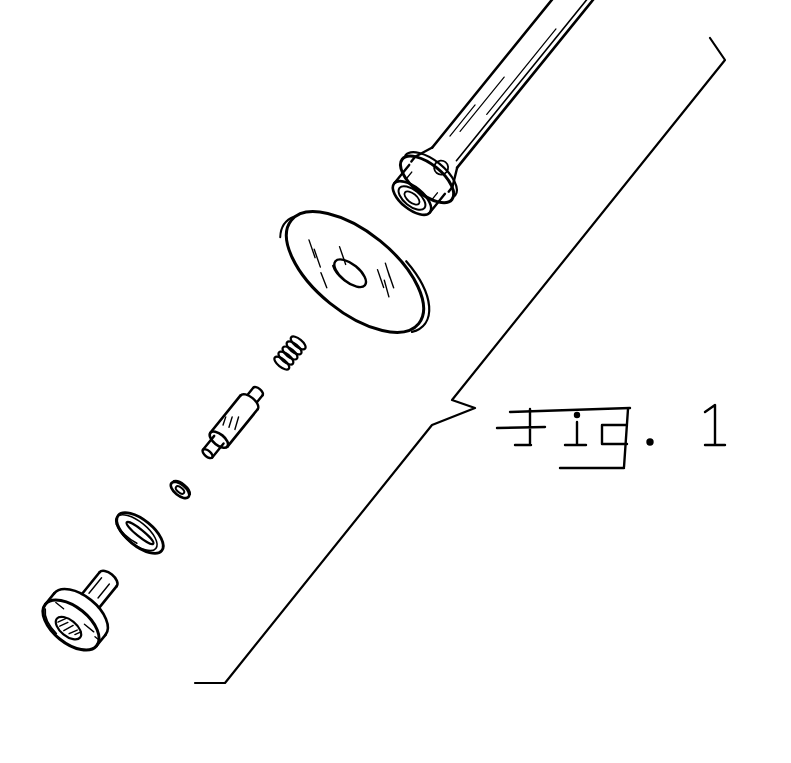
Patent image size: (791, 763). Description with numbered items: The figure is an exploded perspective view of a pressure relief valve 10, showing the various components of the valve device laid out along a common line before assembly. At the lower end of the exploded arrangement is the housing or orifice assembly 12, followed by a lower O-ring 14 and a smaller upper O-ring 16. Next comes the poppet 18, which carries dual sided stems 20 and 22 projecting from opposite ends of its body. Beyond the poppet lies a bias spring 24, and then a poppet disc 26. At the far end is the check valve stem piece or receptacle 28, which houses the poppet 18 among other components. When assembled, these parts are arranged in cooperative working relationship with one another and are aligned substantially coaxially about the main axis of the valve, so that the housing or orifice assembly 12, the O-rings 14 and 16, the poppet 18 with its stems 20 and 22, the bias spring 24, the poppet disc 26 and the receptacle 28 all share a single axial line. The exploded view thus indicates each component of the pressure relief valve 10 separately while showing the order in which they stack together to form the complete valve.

The pressure relief valve 10 is at (189, 251).
The housing or orifice assembly 12 is at (102, 633).
The lower O-ring 14 is at (167, 543).
The upper O-ring 16 is at (190, 490).
The poppet 18 is at (257, 430).
The stem 20 is at (222, 455).
The stem 22 is at (260, 407).
The bias spring 24 is at (300, 360).
The poppet disc 26 is at (403, 313).
The check valve stem piece or receptacle 28 is at (513, 100).